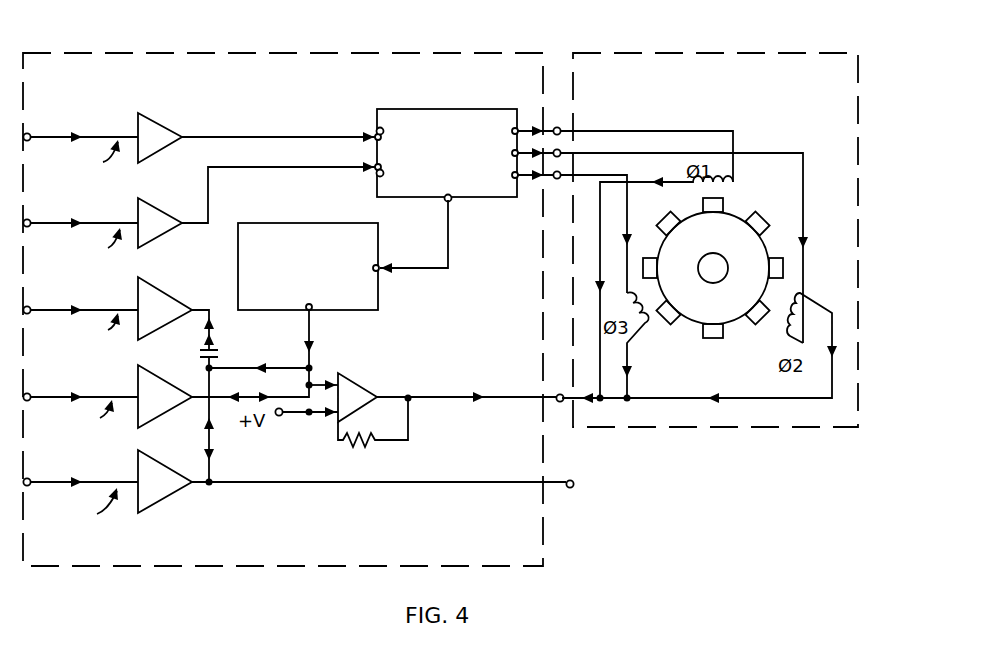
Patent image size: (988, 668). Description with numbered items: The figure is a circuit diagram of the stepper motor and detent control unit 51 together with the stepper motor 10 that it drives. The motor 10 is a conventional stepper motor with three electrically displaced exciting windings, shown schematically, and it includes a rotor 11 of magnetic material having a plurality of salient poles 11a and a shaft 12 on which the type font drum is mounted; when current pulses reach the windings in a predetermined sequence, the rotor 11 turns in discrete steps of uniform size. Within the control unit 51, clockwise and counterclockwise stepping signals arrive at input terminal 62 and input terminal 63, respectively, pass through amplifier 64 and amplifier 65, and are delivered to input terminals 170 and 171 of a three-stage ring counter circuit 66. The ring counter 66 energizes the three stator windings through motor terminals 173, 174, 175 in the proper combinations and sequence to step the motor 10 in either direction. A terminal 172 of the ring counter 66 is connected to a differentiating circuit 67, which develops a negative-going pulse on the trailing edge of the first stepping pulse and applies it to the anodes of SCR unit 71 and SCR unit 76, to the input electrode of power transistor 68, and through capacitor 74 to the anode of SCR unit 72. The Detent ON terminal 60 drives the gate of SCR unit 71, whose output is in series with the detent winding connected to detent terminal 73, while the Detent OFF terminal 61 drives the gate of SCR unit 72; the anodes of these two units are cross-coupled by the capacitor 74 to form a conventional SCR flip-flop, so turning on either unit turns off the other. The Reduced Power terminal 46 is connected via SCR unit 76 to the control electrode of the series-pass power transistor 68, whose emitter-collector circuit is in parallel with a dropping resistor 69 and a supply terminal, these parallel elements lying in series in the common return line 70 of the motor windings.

The stepper motor 10 is at (720, 53).
The rotor 11 is at (728, 312).
The salient poles 11a is at (725, 200).
The shaft 12 is at (713, 276).
The Reduced Power terminal 46 is at (28, 393).
The control unit 51 is at (305, 53).
The Detent ON terminal 60 is at (29, 478).
The Detent OFF terminal 61 is at (29, 306).
The CW input terminal 62 is at (29, 219).
The CCW input terminal 63 is at (29, 133).
The amplifier 64 is at (158, 215).
The amplifier 65 is at (158, 128).
The three-stage ring counter circuit 66 is at (440, 109).
The differentiating circuit 67 is at (310, 223).
The power transistor 68 is at (345, 373).
The dropping resistor 69 is at (355, 447).
The common return line 70 is at (558, 395).
The SCR unit 71 is at (160, 465).
The SCR unit 72 is at (166, 290).
The detent terminal 73 is at (572, 481).
The capacitor 74 is at (215, 350).
The SCR unit 76 is at (155, 370).
The input terminal 170 is at (378, 173).
The input terminal 171 is at (378, 131).
The terminal 172 is at (452, 200).
The motor terminal 173 is at (560, 130).
The motor terminal 174 is at (561, 152).
The motor terminal 175 is at (562, 174).